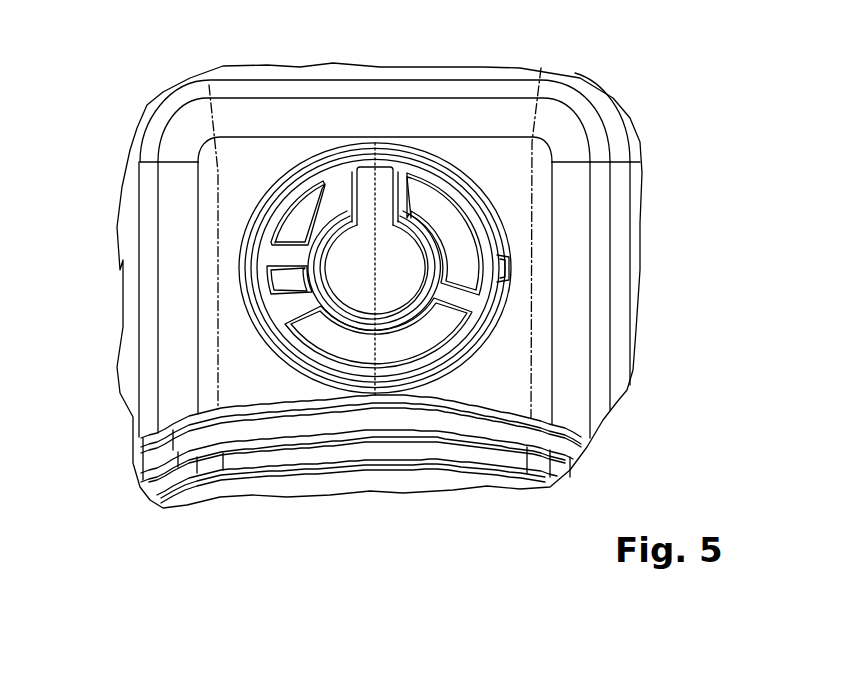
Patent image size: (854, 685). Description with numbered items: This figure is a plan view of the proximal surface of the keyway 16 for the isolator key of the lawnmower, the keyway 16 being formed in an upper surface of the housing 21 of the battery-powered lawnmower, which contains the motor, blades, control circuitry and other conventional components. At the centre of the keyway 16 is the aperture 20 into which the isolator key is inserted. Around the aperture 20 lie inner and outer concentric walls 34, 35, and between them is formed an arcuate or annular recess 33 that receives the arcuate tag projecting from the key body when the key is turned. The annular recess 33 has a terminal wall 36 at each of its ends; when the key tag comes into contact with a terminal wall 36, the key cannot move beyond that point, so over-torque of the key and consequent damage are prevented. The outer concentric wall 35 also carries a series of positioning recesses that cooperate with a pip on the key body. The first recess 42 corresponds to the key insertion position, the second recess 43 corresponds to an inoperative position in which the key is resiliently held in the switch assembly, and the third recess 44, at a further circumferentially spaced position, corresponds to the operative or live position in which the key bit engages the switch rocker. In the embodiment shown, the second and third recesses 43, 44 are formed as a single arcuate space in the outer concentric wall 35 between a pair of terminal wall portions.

The keyway 16 is at (455, 145).
The aperture 20 is at (363, 193).
The housing 21 is at (585, 403).
The annular recess 33 is at (417, 350).
The inner concentric wall 34 is at (323, 303).
The outer concentric wall 35 is at (438, 370).
The terminal wall 36 is at (305, 254).
The first recess 42 is at (507, 271).
The second recess 43 is at (490, 343).
The third recess 44 is at (362, 393).